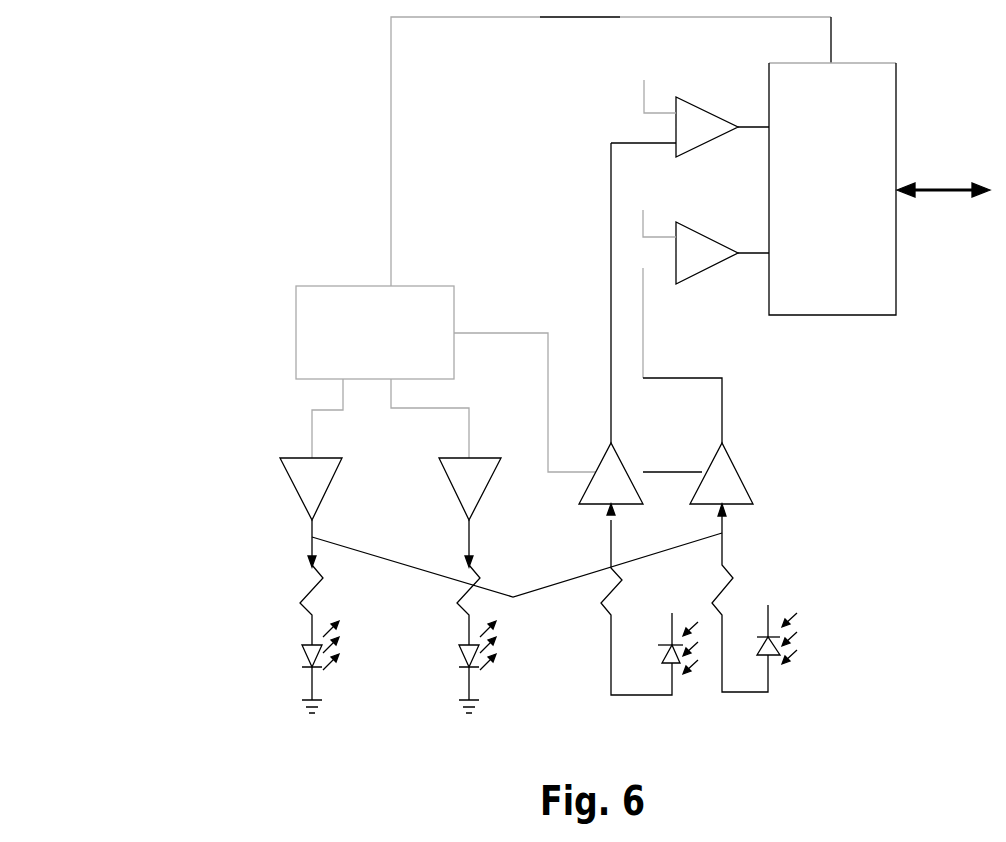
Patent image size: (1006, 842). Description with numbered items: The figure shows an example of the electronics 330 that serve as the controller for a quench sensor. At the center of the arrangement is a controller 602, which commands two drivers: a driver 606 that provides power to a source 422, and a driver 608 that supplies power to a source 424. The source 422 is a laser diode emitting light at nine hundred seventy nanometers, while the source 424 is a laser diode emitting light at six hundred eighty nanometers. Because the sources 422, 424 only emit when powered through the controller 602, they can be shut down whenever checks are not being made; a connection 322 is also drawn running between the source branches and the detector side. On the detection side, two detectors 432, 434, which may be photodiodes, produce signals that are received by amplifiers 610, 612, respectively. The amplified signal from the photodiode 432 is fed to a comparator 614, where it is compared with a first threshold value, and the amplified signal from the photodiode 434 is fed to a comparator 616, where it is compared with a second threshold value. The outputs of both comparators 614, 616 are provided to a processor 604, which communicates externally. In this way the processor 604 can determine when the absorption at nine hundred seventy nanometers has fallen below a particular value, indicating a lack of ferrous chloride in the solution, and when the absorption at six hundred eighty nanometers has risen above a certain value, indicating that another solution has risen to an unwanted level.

The electronics 330 is at (108, 82).
The controller 602 is at (375, 332).
The processor 604 is at (879, 189).
The driver 606 is at (308, 478).
The driver 608 is at (469, 472).
The amplifier 610 is at (611, 488).
The amplifier 612 is at (722, 488).
The comparator 614 is at (683, 118).
The comparator 616 is at (690, 253).
The connection line 322 is at (517, 582).
The source 422 is at (298, 667).
The source 424 is at (457, 665).
The detector 432 is at (682, 663).
The detector 434 is at (780, 657).